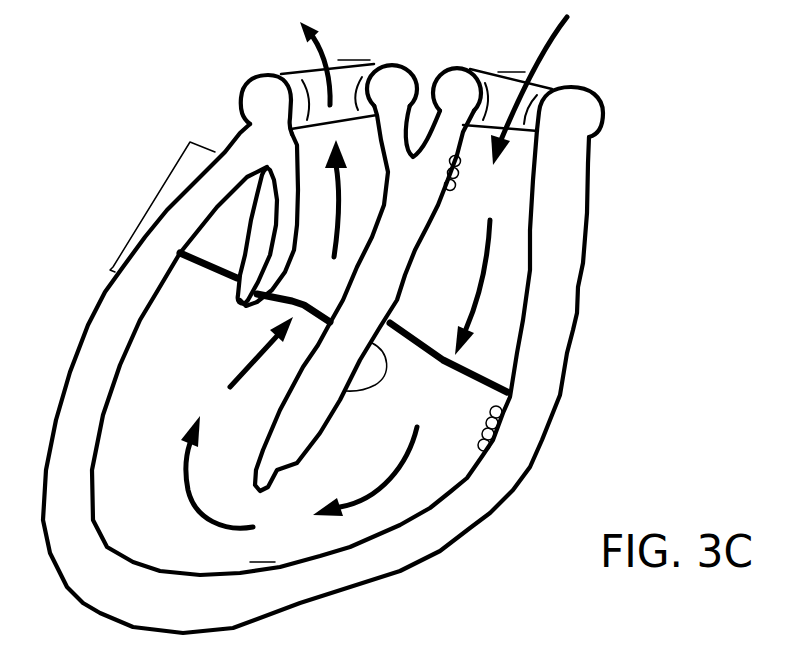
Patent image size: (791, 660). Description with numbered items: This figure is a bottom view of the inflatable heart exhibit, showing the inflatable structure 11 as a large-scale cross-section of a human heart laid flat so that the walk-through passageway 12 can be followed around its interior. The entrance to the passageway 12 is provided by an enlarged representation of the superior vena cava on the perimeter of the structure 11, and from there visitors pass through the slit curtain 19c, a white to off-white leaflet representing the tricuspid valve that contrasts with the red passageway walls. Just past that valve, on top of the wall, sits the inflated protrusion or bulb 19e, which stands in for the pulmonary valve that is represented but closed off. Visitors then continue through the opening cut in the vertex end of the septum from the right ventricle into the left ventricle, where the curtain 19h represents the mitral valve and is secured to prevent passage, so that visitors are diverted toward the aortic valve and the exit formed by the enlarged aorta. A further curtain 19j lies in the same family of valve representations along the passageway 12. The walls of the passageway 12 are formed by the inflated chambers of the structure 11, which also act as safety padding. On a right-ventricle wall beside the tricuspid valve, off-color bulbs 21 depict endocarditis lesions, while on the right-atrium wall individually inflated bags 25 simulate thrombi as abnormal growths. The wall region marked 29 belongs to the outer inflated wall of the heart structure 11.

The inflatable structure 11 is at (620, 187).
The walk-through passageway 12 is at (550, 50).
The curtain 19c is at (490, 376).
The inflated protrusion or bulb 19e is at (366, 379).
The curtain 19h is at (222, 281).
The mitral valve leaflet 19j is at (283, 298).
The bulbs 21 is at (481, 434).
The individually inflated bags 25 is at (458, 184).
The heart wall (epicardium) 29 is at (581, 276).